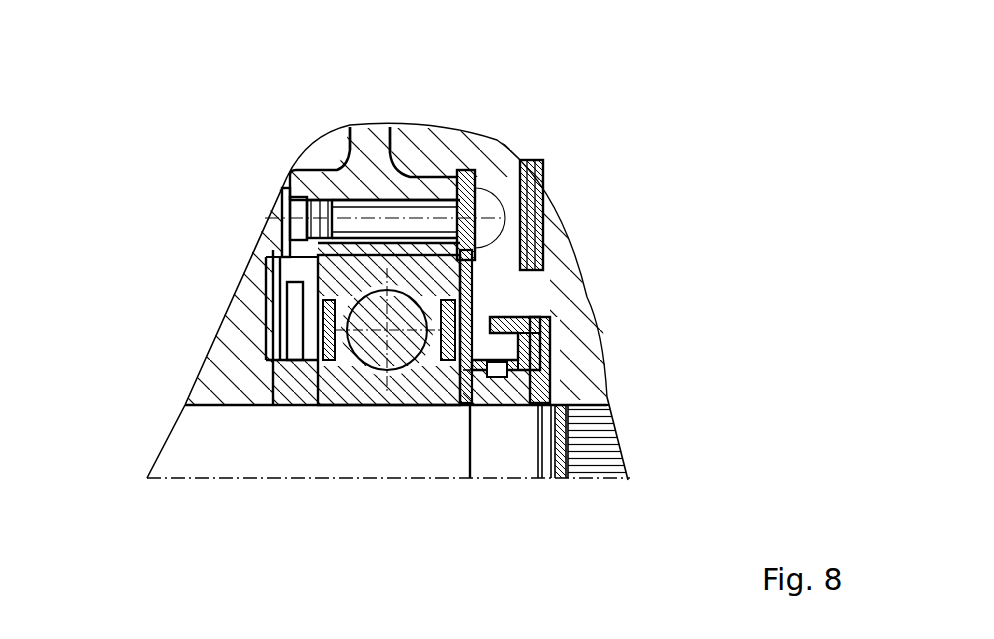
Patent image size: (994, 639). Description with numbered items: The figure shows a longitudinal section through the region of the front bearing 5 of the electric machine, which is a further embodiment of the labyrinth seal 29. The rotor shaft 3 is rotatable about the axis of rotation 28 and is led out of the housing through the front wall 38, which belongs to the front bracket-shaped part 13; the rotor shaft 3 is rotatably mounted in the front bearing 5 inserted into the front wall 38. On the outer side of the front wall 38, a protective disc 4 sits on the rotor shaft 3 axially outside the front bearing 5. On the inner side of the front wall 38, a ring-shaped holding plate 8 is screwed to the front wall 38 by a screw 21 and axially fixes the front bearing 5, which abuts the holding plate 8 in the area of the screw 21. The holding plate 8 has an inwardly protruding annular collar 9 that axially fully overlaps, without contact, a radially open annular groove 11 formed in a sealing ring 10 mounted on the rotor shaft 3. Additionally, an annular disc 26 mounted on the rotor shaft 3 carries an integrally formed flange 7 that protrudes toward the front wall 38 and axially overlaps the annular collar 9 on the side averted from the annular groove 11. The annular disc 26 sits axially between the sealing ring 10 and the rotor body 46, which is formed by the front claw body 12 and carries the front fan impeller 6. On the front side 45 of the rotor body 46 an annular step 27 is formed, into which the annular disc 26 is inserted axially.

The rotor shaft 3 is at (190, 445).
The protective disc 4 is at (262, 340).
The front bearing 5 is at (297, 190).
The front fan impeller 6 is at (523, 200).
The flange 7 is at (540, 312).
The holding plate 8 is at (547, 193).
The annular collar 9 is at (520, 347).
The sealing ring 10 is at (492, 380).
The annular groove 11 is at (490, 378).
The front claw body 12 is at (661, 377).
The rotor body 46 is at (540, 360).
The front bracket-shaped part 13 is at (378, 135).
The screw 21 is at (417, 210).
The annular disc 26 is at (661, 377).
The annular step 27 is at (607, 430).
The axis of rotation 28 is at (173, 478).
The labyrinth seal 29 is at (500, 152).
The front wall 38 is at (350, 143).
The front side 45 is at (540, 294).